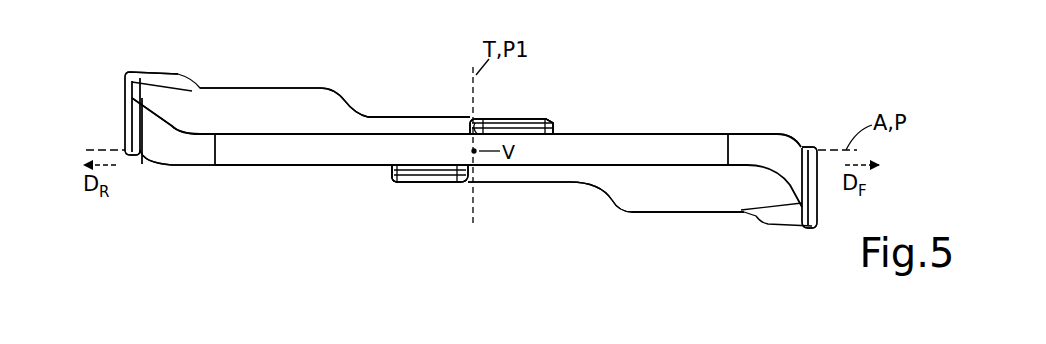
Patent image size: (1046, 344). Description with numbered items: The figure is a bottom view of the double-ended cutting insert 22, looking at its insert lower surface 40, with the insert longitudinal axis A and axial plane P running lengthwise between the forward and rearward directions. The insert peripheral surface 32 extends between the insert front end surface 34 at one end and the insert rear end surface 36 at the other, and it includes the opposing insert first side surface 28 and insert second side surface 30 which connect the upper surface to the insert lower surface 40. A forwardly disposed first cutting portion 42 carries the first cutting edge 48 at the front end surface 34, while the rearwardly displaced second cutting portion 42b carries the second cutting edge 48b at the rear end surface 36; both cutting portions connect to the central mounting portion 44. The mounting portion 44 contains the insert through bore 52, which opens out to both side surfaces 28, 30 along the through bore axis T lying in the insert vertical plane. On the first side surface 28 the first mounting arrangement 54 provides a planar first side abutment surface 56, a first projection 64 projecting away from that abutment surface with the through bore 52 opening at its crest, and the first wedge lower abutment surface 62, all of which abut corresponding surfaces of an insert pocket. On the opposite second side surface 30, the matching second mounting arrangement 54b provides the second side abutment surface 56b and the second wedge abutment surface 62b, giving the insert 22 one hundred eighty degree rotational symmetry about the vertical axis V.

The cutting insert 22 is at (764, 43).
The insert first side surface 28 is at (267, 74).
The insert second side surface 30 is at (272, 181).
The insert peripheral surface 32 is at (617, 178).
The insert front end surface 34 is at (785, 162).
The insert rear end surface 36 is at (151, 131).
The insert lower surface 40 is at (291, 157).
The first cutting portion 42 is at (705, 112).
The second cutting portion 42b is at (198, 183).
The mounting portion 44 is at (400, 94).
The first cutting edge 48 is at (819, 198).
The second cutting edge 48b is at (125, 95).
The insert through bore 52 is at (396, 203).
The first mounting arrangement 54 is at (556, 97).
The second mounting arrangement 54b is at (523, 198).
The first side abutment surface 56 is at (508, 122).
The second side abutment surface 56b is at (410, 172).
The first wedge lower abutment surface 62 is at (550, 118).
The second wedge lower abutment surface 62b is at (392, 182).
The first projection 64 is at (435, 91).